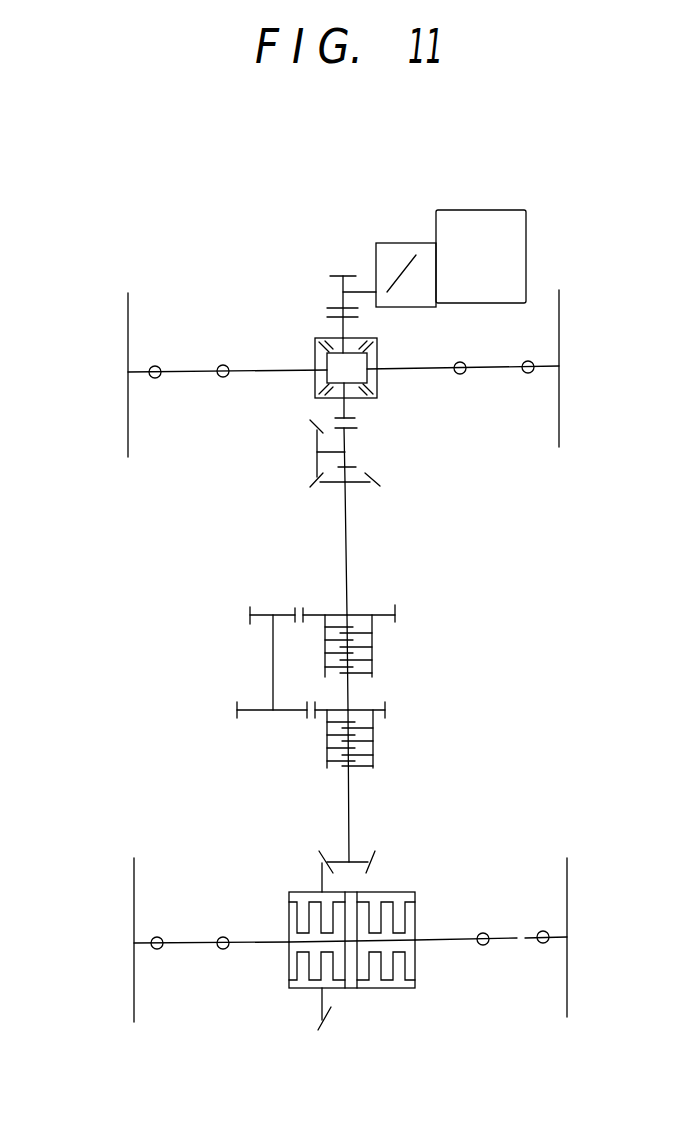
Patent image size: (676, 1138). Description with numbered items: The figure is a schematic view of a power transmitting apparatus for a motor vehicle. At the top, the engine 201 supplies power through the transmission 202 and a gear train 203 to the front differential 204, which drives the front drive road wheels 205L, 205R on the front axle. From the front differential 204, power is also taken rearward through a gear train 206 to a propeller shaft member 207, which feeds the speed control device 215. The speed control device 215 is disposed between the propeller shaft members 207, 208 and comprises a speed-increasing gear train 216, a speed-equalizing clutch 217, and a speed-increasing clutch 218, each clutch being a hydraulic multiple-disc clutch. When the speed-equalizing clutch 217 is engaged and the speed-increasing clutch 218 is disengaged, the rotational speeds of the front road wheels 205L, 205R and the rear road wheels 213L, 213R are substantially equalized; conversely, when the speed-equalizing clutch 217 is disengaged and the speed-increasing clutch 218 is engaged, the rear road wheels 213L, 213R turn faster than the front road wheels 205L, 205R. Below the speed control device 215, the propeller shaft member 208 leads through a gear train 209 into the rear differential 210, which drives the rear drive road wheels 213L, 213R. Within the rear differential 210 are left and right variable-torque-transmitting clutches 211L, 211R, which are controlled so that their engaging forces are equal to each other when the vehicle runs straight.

The engine 201 is at (471, 210).
The transmission 202 is at (392, 243).
The gear train 203 is at (313, 275).
The front differential 204 is at (386, 405).
The front drive road wheel 205L is at (128, 413).
The front drive road wheel 205R is at (559, 422).
The gear train 206 is at (300, 455).
The propeller shaft member 207 is at (348, 575).
The propeller shaft member 208 is at (349, 830).
The gear train 209 is at (313, 852).
The rear differential 210 is at (367, 1010).
The variable-torque-transmitting clutch 211L is at (293, 998).
The variable-torque-transmitting clutch 211R is at (427, 898).
The rear drive road wheel 213L is at (134, 983).
The rear drive road wheel 213R is at (567, 983).
The speed control device 215 is at (507, 657).
The speed-increasing gear train 216 is at (235, 663).
The speed-equalizing clutch 217 is at (383, 662).
The speed-increasing clutch 218 is at (385, 753).